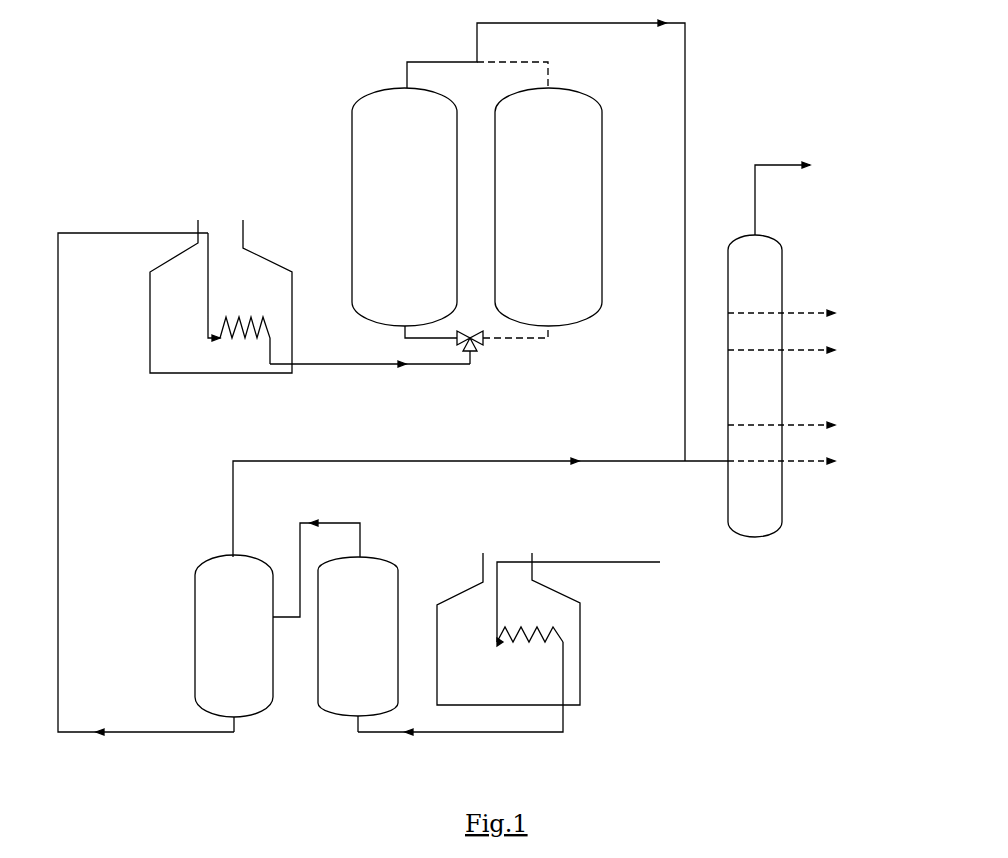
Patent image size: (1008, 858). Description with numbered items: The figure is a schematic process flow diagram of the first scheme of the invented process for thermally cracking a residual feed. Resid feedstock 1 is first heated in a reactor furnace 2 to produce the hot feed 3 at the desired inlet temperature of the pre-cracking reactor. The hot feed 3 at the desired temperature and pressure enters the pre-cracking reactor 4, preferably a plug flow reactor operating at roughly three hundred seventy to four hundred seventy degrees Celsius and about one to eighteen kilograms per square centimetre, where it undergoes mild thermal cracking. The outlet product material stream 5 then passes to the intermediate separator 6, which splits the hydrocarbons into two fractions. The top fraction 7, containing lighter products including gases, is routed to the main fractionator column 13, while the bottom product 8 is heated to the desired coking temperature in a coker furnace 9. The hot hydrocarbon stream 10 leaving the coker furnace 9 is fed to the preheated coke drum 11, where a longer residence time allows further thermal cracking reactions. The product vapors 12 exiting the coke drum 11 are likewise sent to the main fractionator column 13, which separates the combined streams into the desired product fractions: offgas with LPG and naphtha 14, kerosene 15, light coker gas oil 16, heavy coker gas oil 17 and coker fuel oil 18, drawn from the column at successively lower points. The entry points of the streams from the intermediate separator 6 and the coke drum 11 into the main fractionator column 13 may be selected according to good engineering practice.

The resid feedstock 1 is at (586, 562).
The reactor furnace 2 is at (580, 628).
The hot feed 3 is at (460, 733).
The pre-cracking reactor 4 is at (398, 587).
The outlet product material stream 5 is at (318, 523).
The intermediate separator 6 is at (197, 577).
The top fraction 7 is at (258, 461).
The bottom product 8 is at (142, 731).
The coker furnace 9 is at (255, 253).
The hot hydrocarbon stream 10 is at (326, 364).
The preheated coke drum 11 is at (495, 207).
The product vapors 12 is at (590, 23).
The main fractionator column 13 is at (782, 272).
The offgas with LPG and naphtha 14 is at (801, 197).
The kerosene 15 is at (795, 314).
The light coker gas oil (LCGO) 16 is at (795, 350).
The heavy coker gas oil (HCGO) 17 is at (795, 425).
The coker fuel oil (CFO) 18 is at (795, 462).